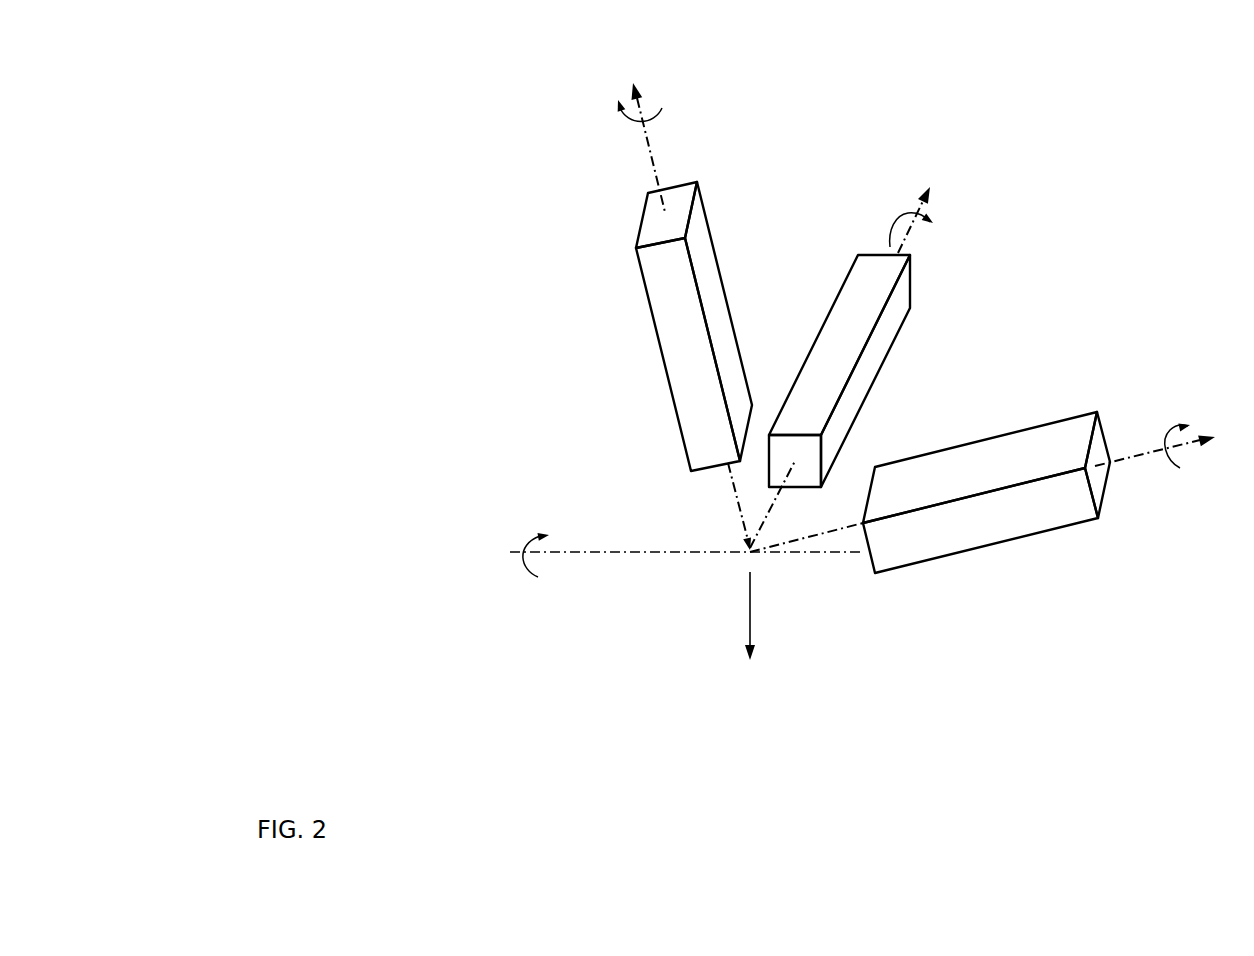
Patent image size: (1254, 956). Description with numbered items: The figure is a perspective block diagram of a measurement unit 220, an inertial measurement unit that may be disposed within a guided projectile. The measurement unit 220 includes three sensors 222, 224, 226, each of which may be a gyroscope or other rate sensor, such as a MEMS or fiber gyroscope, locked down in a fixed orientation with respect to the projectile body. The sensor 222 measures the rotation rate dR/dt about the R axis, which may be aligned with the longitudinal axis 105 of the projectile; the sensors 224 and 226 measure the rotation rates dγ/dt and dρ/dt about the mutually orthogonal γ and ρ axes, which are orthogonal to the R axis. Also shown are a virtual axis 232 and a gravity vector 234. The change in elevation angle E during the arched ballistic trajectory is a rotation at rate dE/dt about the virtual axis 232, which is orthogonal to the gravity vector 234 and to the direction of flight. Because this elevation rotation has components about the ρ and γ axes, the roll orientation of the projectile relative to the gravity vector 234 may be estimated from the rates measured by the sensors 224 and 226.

The measurement unit 220 is at (526, 88).
The longitudinal axis 105 is at (935, 195).
The sensor 222 is at (893, 345).
The sensor 224 is at (650, 313).
The sensor 226 is at (1070, 527).
The virtual axis 232 is at (625, 552).
The gravity vector 234 is at (749, 616).